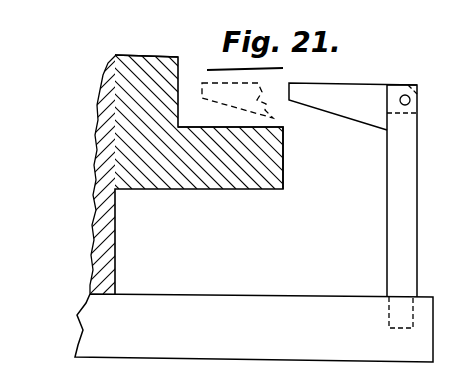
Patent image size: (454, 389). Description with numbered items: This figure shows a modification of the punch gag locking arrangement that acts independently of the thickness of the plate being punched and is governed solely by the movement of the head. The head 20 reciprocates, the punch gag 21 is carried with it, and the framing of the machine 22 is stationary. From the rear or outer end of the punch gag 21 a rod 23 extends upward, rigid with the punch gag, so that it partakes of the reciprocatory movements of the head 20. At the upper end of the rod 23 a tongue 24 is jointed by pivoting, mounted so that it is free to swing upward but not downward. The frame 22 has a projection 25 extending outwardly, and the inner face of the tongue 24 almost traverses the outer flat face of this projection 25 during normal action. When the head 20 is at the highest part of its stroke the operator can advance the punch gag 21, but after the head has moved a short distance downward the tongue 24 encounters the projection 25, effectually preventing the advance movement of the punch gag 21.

The head 20 is at (116, 232).
The punch gag 21 is at (226, 303).
The framing of the machine 22 is at (162, 55).
The rod 23 is at (395, 212).
The tongue 24 is at (370, 90).
The projection 25 is at (284, 152).